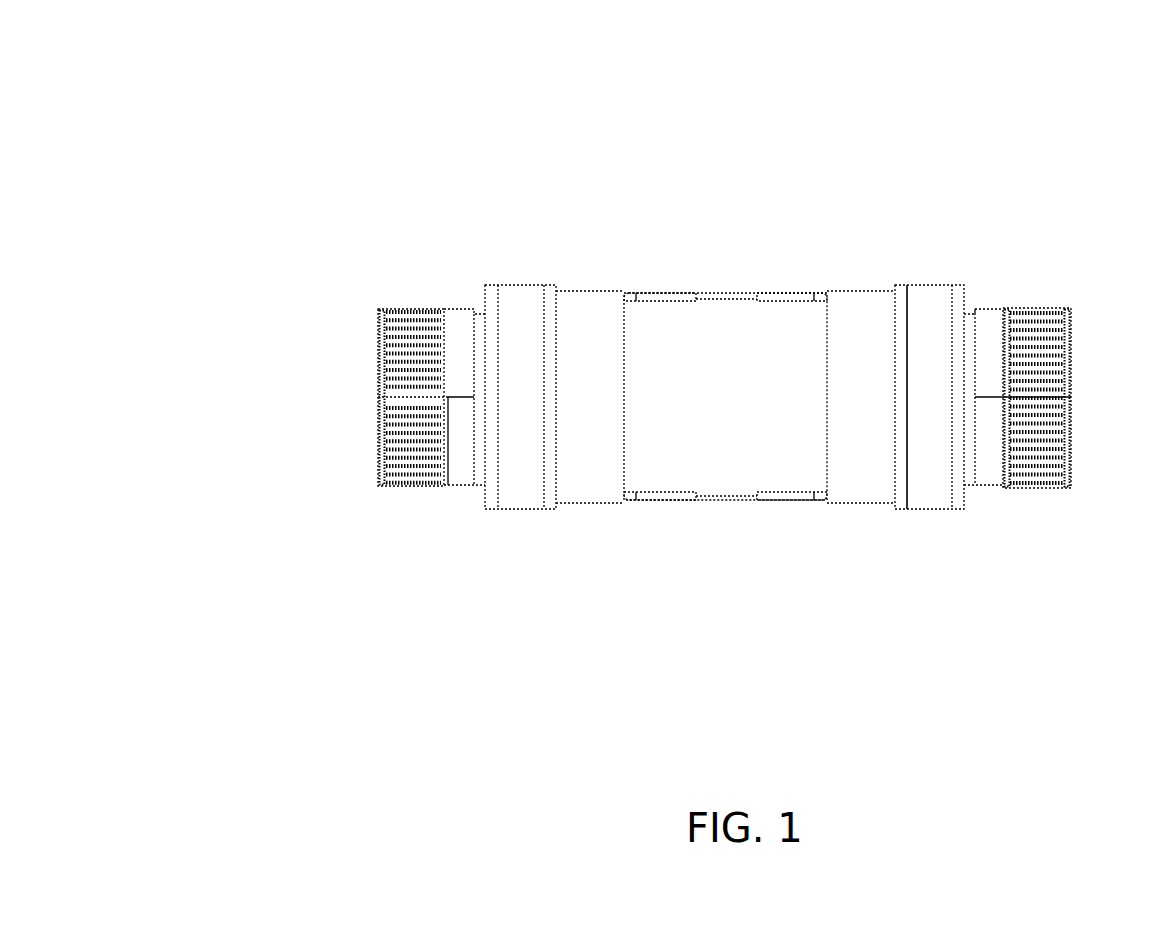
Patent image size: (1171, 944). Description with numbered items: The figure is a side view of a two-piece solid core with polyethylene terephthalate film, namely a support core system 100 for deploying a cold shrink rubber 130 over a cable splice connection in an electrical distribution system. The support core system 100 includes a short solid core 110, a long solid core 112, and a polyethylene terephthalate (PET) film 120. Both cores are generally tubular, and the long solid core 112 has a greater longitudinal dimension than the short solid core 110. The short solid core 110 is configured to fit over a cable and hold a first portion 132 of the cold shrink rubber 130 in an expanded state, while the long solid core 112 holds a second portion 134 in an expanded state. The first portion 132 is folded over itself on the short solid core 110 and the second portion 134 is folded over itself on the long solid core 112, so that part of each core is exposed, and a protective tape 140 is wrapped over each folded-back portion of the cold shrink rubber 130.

The support core system 100 is at (251, 94).
The short solid core 110 is at (1072, 368).
The long solid core 112 is at (370, 361).
The polyethylene terephthalate (PET) film 120 is at (1028, 339).
The cold shrink rubber 130 is at (728, 297).
The first portion of the cold shrink rubber 132 is at (904, 326).
The second portion of the cold shrink rubber 134 is at (641, 322).
The protective tape 140 is at (687, 445).